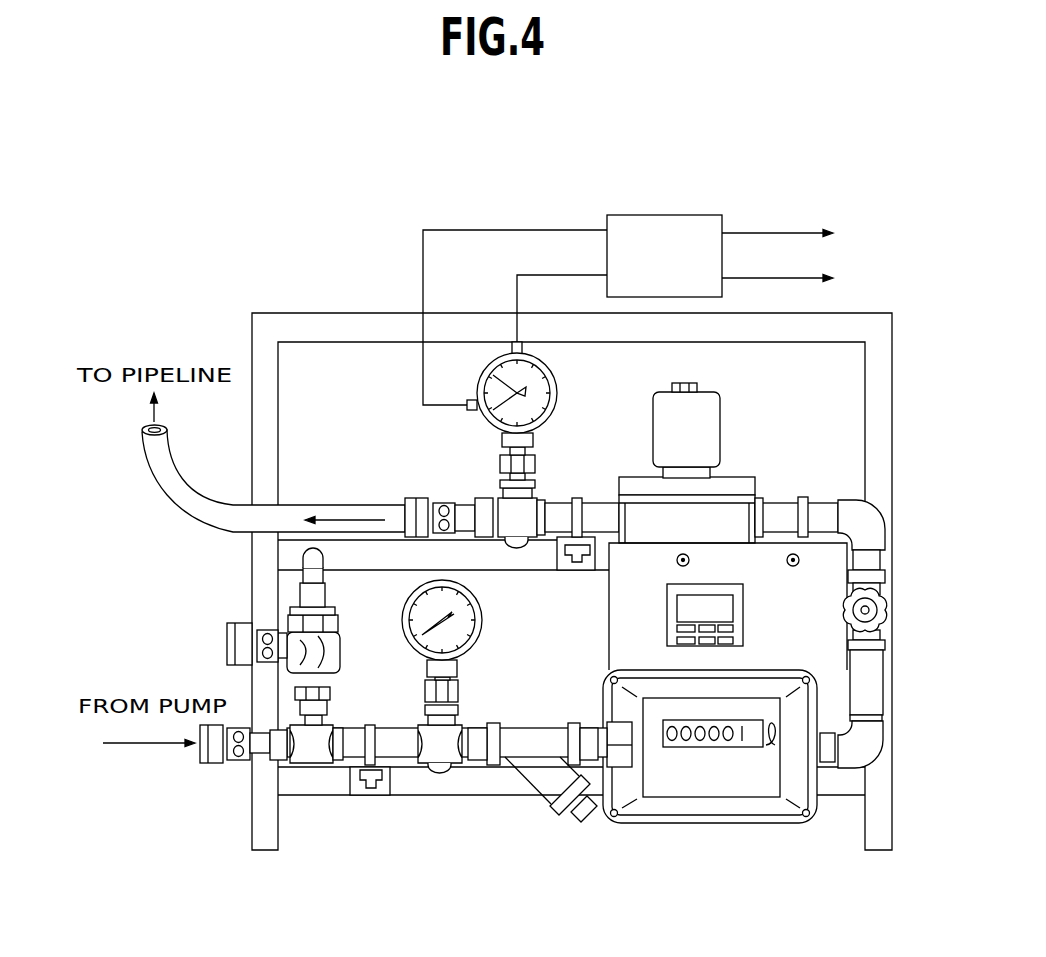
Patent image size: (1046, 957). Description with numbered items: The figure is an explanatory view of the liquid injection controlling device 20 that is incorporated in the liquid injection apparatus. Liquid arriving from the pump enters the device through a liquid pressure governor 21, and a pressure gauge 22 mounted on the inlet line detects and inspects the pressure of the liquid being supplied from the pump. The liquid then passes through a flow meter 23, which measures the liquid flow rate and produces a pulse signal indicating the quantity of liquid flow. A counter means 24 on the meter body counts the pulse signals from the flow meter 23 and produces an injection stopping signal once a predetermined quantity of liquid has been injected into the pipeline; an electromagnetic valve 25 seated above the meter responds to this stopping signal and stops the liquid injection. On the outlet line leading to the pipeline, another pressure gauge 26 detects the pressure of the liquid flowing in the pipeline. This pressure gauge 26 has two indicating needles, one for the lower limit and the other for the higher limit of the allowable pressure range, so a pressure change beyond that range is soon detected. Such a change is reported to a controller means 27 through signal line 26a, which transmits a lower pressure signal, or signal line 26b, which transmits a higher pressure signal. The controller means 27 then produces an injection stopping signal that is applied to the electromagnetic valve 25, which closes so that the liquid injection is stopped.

The liquid injection controlling device 20 is at (284, 250).
The liquid pressure governor 21 is at (320, 662).
The pressure gauge 22 is at (467, 645).
The flow meter 23 is at (737, 785).
The counter means 24 is at (718, 606).
The electromagnetic valve 25 is at (705, 450).
The pressure gauge 26 is at (560, 378).
The signal line 26a is at (453, 230).
The signal line 26b is at (517, 292).
The controller means 27 is at (667, 220).